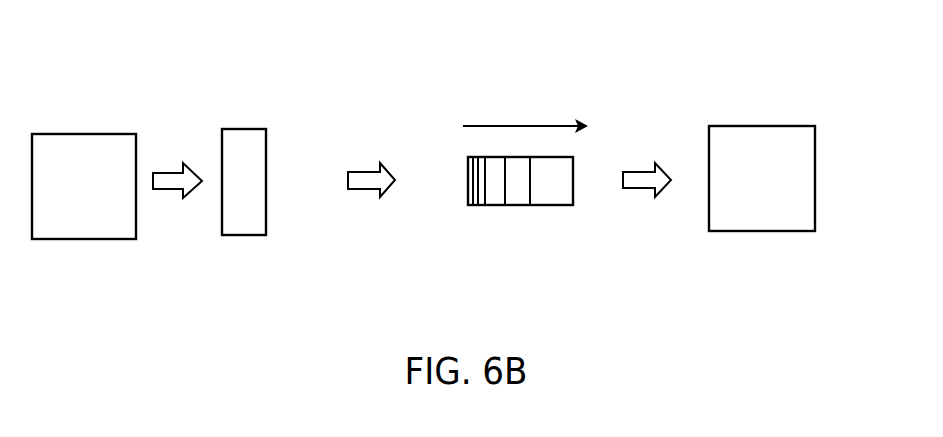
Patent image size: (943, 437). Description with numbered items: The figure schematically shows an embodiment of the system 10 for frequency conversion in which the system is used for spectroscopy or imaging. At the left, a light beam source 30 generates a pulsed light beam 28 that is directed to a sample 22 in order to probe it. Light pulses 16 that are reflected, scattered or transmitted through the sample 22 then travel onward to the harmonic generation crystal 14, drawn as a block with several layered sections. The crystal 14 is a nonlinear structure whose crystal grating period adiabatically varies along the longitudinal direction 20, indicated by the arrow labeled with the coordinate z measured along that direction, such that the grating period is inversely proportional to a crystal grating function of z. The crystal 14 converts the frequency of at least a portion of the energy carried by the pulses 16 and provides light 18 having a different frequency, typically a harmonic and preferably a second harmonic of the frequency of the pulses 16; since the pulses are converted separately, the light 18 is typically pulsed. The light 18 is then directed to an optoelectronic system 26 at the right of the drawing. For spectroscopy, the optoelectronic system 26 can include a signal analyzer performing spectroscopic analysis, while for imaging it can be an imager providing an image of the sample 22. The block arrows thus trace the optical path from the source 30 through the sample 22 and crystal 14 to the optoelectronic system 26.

The system 10 is at (183, 35).
The harmonic generation crystal 14 is at (516, 200).
The optical pulses 16 is at (367, 181).
The light 18 is at (643, 180).
The longitudinal direction 20 is at (494, 124).
The sample 22 is at (246, 140).
The optoelectronic system 26 is at (743, 217).
The pulsed light beam 28 is at (172, 181).
The light beam source 30 is at (64, 227).